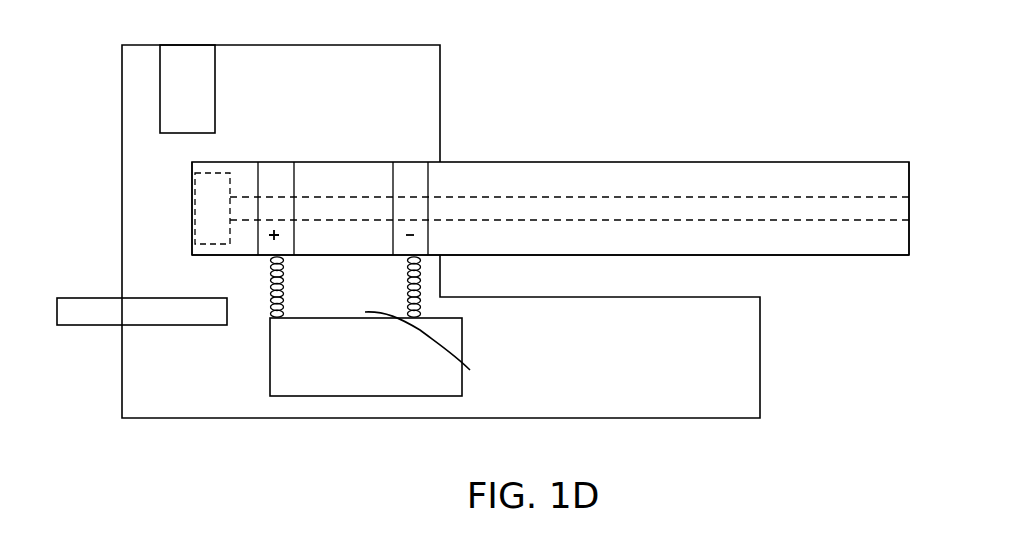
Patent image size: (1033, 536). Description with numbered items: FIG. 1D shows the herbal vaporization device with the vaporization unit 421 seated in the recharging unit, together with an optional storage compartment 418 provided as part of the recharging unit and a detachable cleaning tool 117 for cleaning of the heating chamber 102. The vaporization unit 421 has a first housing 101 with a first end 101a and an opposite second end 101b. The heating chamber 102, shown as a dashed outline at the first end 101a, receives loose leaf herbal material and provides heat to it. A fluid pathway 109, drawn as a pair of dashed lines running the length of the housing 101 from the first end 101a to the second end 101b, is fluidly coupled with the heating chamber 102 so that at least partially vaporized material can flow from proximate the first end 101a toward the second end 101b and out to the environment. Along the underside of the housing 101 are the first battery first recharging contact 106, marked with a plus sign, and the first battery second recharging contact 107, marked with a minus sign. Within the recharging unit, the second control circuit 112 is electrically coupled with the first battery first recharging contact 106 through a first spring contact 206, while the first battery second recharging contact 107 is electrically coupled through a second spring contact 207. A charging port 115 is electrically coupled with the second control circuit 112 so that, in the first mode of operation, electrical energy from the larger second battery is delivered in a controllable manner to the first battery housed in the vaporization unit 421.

The first housing 101 is at (830, 160).
The first end 101a is at (192, 163).
The second end 101b is at (911, 174).
The heating chamber 102 is at (210, 218).
The first battery first recharging contact 106 is at (274, 162).
The first battery second recharging contact 107 is at (404, 161).
The fluid pathway 109 is at (632, 212).
The second control circuit 112 is at (285, 370).
The charging port 115 is at (470, 372).
The detachable cleaning tool 117 is at (88, 328).
The first spring contact 206 is at (270, 287).
The second spring contact 207 is at (420, 303).
The storage compartment 418 is at (162, 74).
The vaporization unit 421 is at (840, 257).